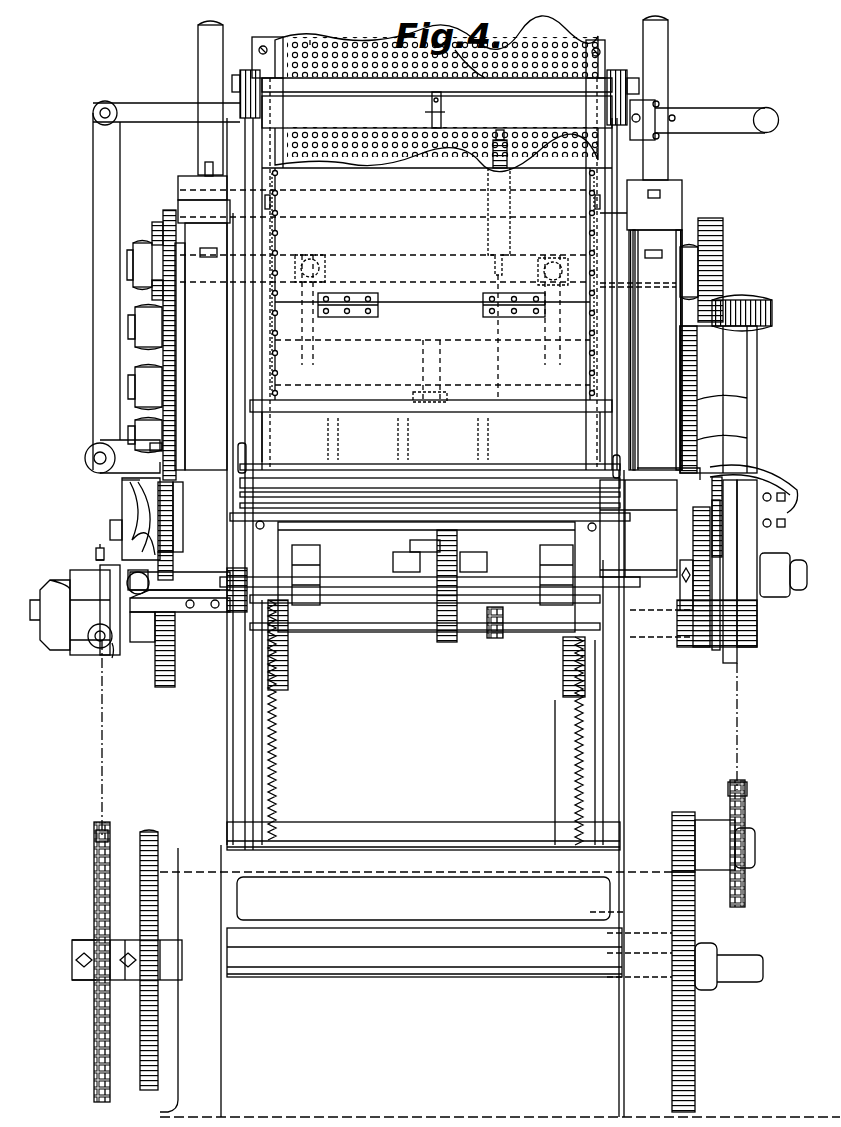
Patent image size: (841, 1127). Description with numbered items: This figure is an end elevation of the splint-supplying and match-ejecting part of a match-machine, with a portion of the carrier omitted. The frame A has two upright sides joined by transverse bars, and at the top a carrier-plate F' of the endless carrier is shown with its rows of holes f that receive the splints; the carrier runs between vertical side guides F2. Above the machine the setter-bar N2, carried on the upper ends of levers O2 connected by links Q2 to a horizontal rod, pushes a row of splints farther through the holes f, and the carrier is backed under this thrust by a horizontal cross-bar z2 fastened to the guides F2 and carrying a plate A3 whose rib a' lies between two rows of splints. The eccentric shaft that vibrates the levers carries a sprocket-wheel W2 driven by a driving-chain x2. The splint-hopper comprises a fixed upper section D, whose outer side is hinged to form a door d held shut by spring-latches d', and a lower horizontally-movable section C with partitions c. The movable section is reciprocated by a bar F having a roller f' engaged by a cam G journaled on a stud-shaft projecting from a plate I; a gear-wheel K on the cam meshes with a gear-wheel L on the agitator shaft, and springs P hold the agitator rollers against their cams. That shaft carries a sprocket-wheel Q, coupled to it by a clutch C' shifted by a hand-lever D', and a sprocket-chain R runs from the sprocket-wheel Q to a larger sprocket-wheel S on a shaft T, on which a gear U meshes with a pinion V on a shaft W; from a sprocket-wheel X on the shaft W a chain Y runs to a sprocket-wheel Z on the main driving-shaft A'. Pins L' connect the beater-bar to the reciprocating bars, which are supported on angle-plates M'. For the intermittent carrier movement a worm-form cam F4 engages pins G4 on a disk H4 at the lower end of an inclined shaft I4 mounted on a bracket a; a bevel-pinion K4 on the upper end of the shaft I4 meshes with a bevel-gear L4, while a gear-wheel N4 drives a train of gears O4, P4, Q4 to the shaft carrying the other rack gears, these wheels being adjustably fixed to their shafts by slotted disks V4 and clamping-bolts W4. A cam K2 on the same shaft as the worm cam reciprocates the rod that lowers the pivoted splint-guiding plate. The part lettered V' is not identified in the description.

The frame A is at (500, 617).
The carrier-plate F' is at (437, 88).
The holes f is at (437, 40).
The setter-bar N2 is at (491, 51).
The horizontal cross-bar z2 is at (437, 112).
The rib a' is at (420, 110).
The plate A3 is at (445, 108).
The vertical side guides F2 is at (258, 37).
The link Q2 is at (246, 72).
The levers O2 is at (240, 142).
The door d is at (396, 285).
The spring-latch d' is at (432, 283).
The fixed hopper-section D is at (431, 286).
The driving-chain x2 is at (496, 274).
The sprocket-wheel W2 is at (493, 160).
The gear-wheel N4 is at (180, 205).
The intermediate gear P4 is at (176, 365).
The gear O4 is at (176, 300).
The intermediate gear Q4 is at (176, 424).
The disk V4 is at (158, 224).
The clamping-bolts W4 is at (150, 243).
The partitions c is at (338, 433).
The movable hopper-section C is at (413, 439).
The rail V' is at (430, 482).
The pin L' is at (445, 446).
The bar F is at (141, 460).
The cam G is at (122, 505).
The roller f' is at (116, 486).
The gear-wheel K is at (173, 504).
The plate I is at (184, 526).
The gear-wheel L is at (165, 573).
The hand-lever D' is at (180, 638).
The sprocket-wheel Q is at (96, 550).
The clutch C' is at (70, 608).
The main driving-shaft A' is at (338, 595).
The sprocket-chain R is at (103, 692).
The sprocket-wheel S is at (110, 830).
The shaft T is at (124, 935).
The spring P is at (278, 738).
The shaft W is at (420, 823).
The angle-plate M' is at (650, 522).
The bracket a is at (657, 325).
The bevel-gear L4 is at (724, 232).
The bevel-pinion K4 is at (752, 300).
The inclined shaft I4 is at (758, 408).
The disk H4 is at (775, 478).
The pins G4 is at (784, 522).
The sprocket-wheel Z is at (757, 630).
The cam K2 is at (705, 650).
The worm-form cam F4 is at (760, 648).
The chain Y is at (738, 708).
The sprocket-wheel X is at (744, 790).
The pinion V is at (713, 827).
The gear U is at (694, 1030).